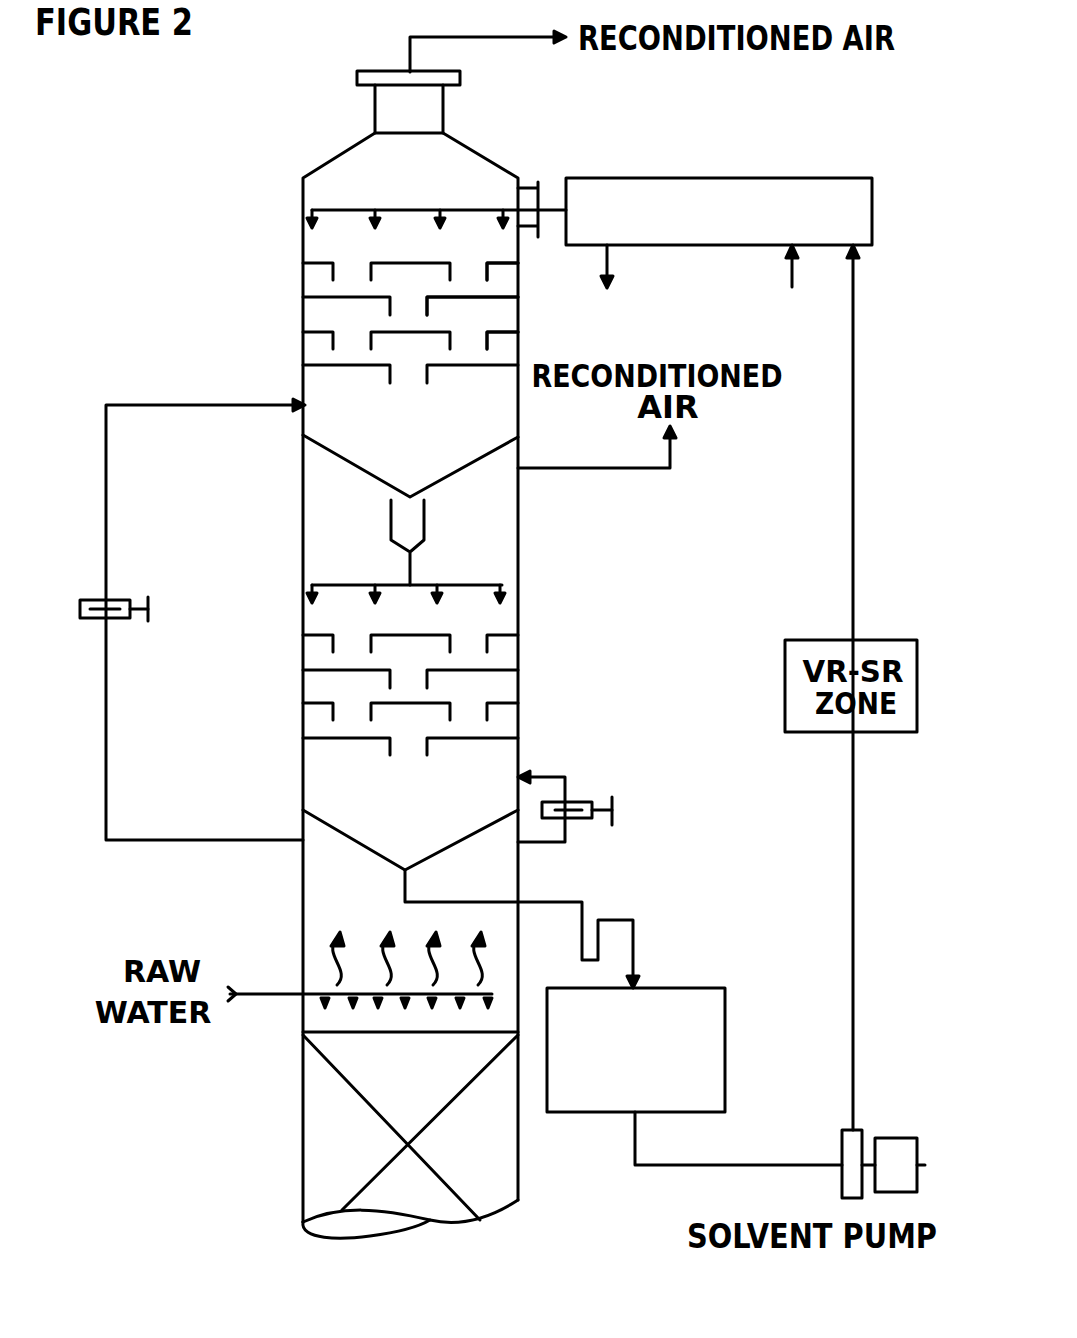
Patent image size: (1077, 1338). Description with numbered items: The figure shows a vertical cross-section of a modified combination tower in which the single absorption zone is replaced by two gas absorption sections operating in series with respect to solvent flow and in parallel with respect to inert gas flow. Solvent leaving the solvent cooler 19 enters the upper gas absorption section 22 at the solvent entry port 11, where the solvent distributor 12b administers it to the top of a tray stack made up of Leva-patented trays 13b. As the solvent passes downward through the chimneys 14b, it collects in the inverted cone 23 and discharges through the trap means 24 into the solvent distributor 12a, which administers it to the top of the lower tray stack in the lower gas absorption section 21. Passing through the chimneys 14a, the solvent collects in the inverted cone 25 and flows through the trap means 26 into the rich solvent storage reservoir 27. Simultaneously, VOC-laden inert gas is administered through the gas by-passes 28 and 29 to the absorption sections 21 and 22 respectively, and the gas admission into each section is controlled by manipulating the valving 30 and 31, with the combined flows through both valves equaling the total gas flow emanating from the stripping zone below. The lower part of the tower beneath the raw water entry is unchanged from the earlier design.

The solvent entry port 11 is at (530, 188).
The solvent distributor 12a is at (358, 577).
The solvent distributor 12b is at (337, 200).
The trays 13b is at (490, 302).
The chimneys 14a is at (352, 718).
The chimneys 14b is at (352, 346).
The solvent cooler 19 is at (793, 173).
The lower gas absorption section 21 is at (320, 688).
The upper gas absorption section 22 is at (313, 310).
The inverted cone 23 is at (343, 465).
The trap means 24 is at (383, 508).
The inverted cone 25 is at (362, 850).
The trap means 26 is at (608, 913).
The rich solvent storage reservoir 27 is at (688, 1007).
The gas by-pass 28 is at (572, 780).
The gas by-pass 29 is at (115, 705).
The valving 30 is at (617, 807).
The valving 31 is at (120, 592).